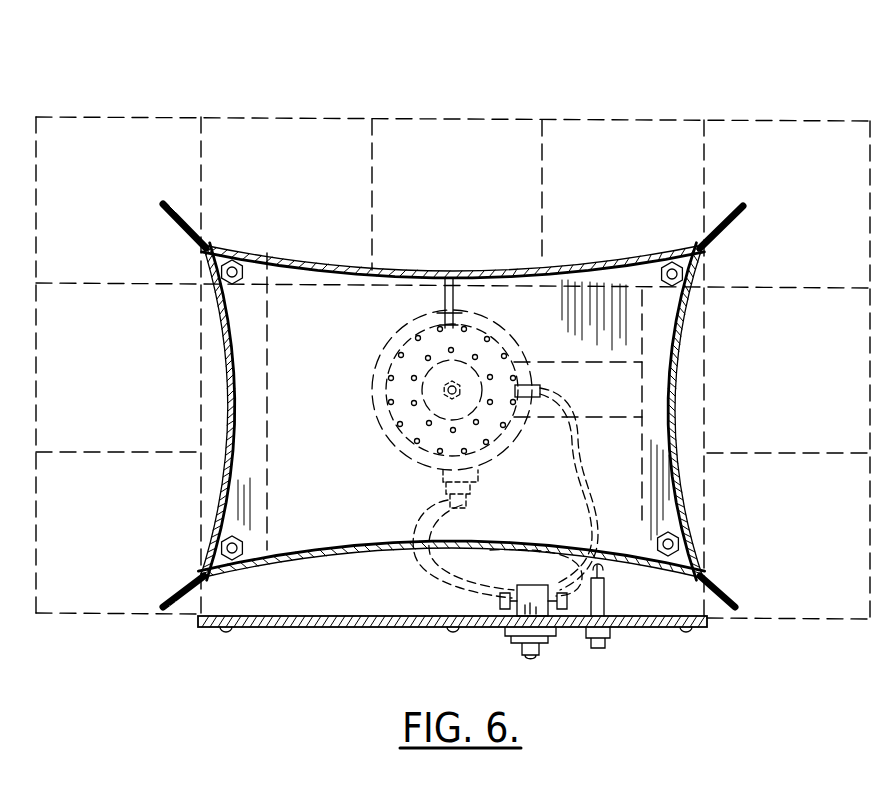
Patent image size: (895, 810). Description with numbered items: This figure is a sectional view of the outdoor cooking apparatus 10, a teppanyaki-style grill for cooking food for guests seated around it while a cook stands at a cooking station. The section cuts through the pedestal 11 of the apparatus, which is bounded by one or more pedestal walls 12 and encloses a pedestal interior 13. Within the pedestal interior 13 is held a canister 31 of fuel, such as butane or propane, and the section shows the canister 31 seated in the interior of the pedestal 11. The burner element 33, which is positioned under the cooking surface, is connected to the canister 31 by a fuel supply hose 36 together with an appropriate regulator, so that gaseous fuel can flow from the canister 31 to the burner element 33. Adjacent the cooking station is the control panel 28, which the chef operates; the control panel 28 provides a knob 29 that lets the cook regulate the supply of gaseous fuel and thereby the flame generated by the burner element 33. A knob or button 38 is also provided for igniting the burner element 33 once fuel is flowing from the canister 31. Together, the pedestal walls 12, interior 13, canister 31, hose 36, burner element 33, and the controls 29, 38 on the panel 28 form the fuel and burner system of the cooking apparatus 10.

The outdoor cooking apparatus 10 is at (783, 86).
The pedestal 11 is at (485, 268).
The pedestal wall 12 is at (312, 258).
The pedestal interior 13 is at (306, 322).
The control panel 28 is at (400, 630).
The control knob 29 is at (534, 656).
The canister 31 is at (386, 425).
The burner element 33 is at (406, 378).
The fuel supply hose 36 is at (472, 525).
The knob or button 38 is at (600, 648).